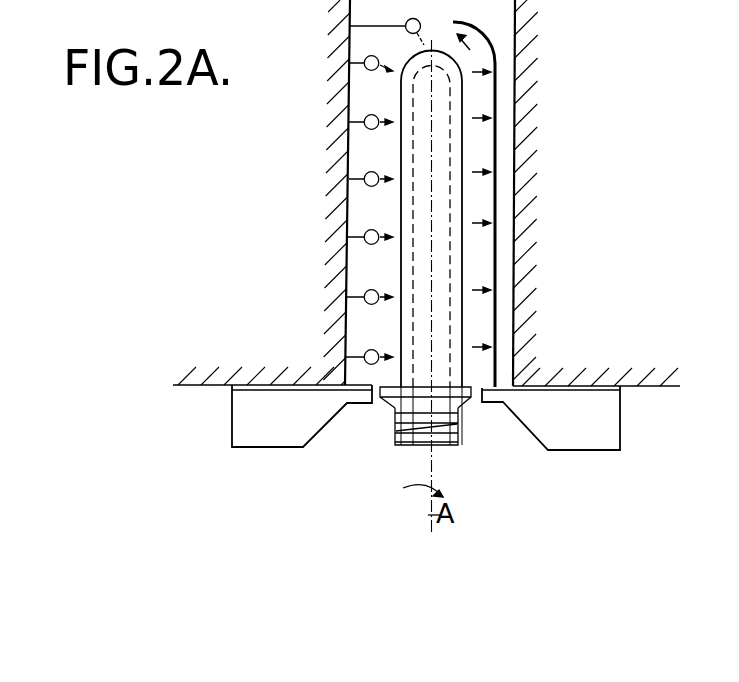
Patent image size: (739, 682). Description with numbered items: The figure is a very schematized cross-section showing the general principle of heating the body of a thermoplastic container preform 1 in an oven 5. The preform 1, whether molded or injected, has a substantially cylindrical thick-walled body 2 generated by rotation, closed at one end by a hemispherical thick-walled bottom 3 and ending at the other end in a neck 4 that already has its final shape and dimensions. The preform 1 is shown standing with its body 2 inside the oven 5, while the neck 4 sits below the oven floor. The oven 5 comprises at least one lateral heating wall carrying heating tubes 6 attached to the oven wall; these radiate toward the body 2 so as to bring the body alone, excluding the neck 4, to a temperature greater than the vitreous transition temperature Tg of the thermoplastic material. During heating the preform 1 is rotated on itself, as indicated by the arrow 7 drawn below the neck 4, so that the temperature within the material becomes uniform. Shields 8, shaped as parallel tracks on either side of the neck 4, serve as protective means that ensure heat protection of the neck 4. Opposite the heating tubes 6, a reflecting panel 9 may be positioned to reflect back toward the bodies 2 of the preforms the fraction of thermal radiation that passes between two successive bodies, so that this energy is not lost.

The container preform 1 is at (466, 145).
The body 2 is at (453, 253).
The hemispherical thick-walled bottom 3 is at (457, 63).
The neck 4 is at (447, 445).
The oven 5 is at (387, 40).
The heating tubes 6 is at (364, 234).
The arrow 7 is at (412, 488).
The shields 8 is at (516, 470).
The reflecting panel 9 is at (495, 193).